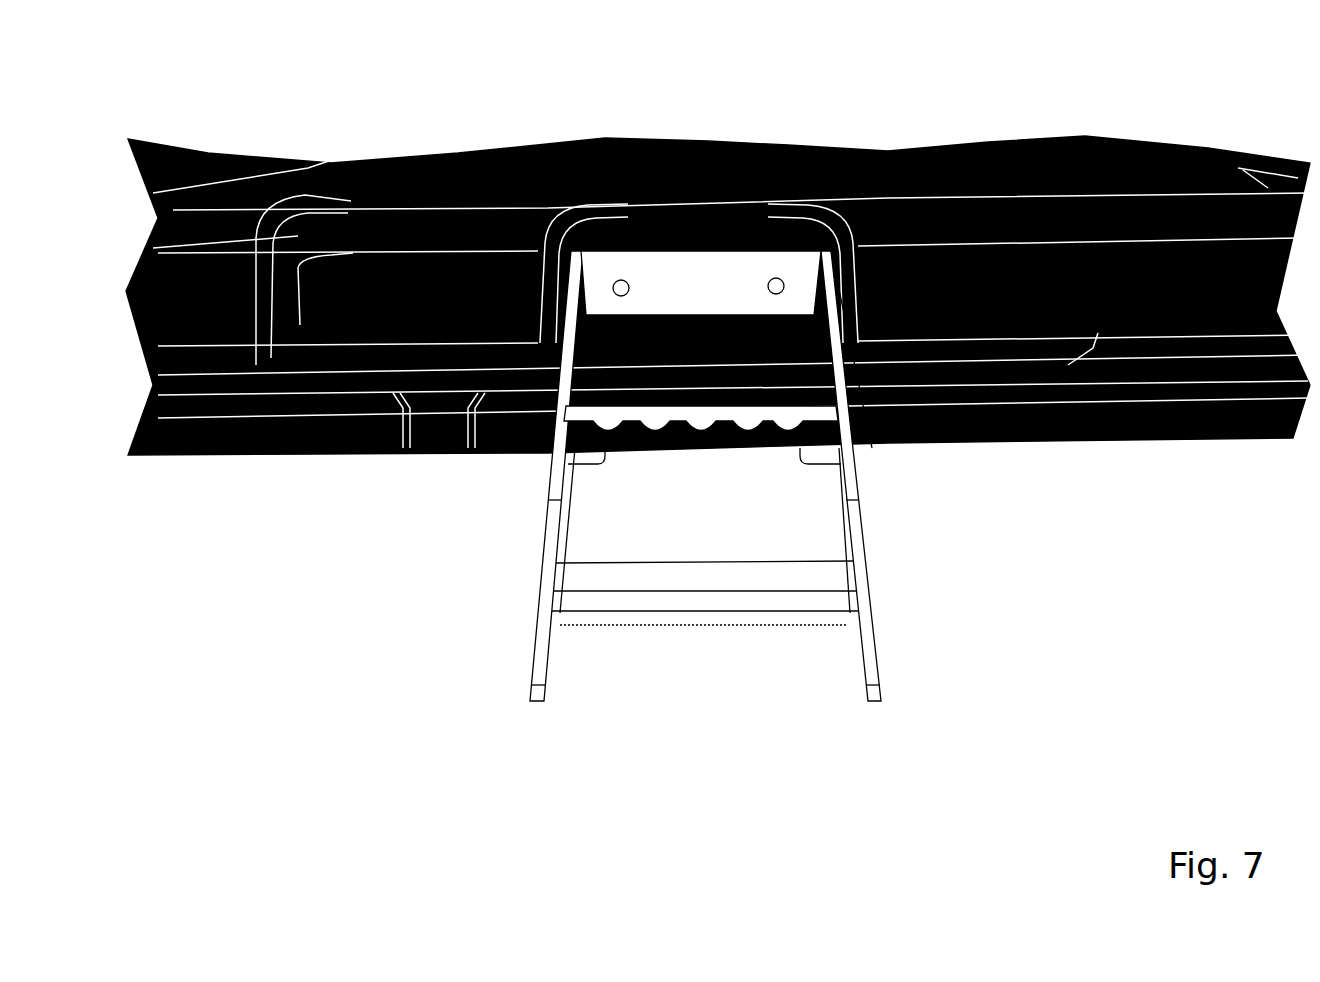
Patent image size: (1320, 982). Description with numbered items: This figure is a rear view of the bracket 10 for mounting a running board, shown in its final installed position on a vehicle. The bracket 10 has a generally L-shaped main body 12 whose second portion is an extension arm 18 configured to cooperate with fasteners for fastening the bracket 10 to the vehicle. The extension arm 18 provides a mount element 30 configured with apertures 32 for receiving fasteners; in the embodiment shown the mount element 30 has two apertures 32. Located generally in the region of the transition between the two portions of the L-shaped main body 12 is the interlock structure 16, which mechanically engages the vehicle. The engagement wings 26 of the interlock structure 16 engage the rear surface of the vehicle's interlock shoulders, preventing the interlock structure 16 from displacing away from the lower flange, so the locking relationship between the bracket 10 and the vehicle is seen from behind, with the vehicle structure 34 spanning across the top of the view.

The bracket 10 is at (483, 588).
The main body 12 is at (847, 560).
The interlock structure 16 is at (713, 440).
The extension arm 18 is at (866, 440).
The engagement wings 26 is at (573, 436).
The mount element 30 is at (733, 270).
The aperture 32 is at (613, 282).
The bumper beam 34 is at (422, 140).